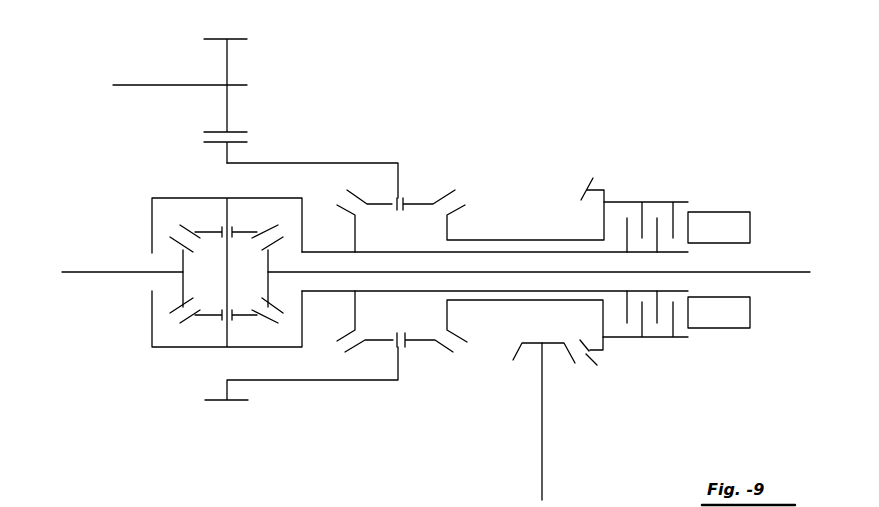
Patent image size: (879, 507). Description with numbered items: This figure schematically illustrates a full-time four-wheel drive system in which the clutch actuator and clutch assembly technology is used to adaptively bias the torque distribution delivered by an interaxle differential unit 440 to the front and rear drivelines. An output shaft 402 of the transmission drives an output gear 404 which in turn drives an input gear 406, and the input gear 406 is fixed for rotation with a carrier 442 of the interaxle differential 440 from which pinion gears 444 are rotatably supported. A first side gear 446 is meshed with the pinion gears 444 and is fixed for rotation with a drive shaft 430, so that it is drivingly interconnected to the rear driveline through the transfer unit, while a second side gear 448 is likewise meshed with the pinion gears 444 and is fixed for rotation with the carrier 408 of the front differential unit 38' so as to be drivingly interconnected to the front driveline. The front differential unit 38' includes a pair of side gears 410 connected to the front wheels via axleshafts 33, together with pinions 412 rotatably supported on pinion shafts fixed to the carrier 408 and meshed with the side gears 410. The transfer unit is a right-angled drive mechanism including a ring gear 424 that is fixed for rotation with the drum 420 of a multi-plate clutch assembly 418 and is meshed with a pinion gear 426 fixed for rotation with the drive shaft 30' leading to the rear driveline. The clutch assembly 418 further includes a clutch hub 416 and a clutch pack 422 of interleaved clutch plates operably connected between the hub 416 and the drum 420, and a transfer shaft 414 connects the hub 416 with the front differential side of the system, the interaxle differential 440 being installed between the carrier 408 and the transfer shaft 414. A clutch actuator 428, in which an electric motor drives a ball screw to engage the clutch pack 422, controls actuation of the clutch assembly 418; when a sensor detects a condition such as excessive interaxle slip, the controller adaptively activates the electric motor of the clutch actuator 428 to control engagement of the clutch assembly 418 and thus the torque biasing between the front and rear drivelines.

The axleshafts 33 is at (87, 272).
The drive shaft 30' is at (575, 421).
The front differential unit 38' is at (139, 395).
The output shaft 402 is at (148, 85).
The output gear 404 is at (241, 37).
The input gear 406 is at (237, 402).
The carrier 408 is at (172, 197).
The side gears 410 is at (268, 285).
The pinions 412 is at (235, 230).
The transfer shaft 414 is at (490, 291).
The clutch hub 416 is at (648, 251).
The clutch assembly 418 is at (651, 196).
The drum 420 is at (680, 338).
The clutch pack 422 is at (633, 219).
The ring gear 424 is at (590, 177).
The pinion gear 426 is at (517, 352).
The clutch actuator 428 is at (758, 222).
The drive shaft 430 is at (535, 238).
The interaxle differential unit 440 is at (431, 169).
The carrier 442 is at (312, 162).
The pinion gears 444 is at (382, 205).
The first side gear 446 is at (447, 224).
The second side gear 448 is at (355, 307).